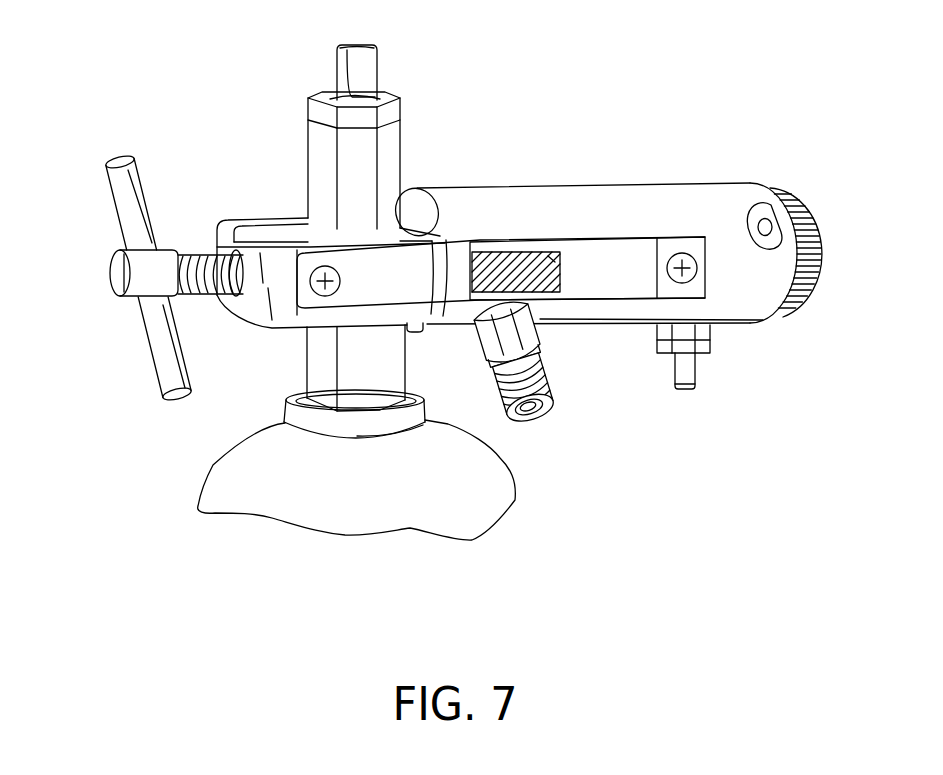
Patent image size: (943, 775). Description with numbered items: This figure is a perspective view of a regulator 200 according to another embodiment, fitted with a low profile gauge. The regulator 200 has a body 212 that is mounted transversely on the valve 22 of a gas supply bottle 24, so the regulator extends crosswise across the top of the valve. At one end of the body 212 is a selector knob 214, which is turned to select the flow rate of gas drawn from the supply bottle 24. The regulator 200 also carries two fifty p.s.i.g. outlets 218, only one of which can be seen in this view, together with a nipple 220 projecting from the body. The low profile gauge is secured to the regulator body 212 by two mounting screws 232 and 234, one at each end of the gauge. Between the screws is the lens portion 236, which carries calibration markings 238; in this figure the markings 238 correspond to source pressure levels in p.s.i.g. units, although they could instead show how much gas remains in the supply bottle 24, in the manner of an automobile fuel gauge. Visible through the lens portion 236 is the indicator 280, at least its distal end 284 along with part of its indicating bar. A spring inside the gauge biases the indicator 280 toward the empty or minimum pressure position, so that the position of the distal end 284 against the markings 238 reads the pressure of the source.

The valve 22 is at (308, 137).
The gas supply bottle 24 is at (241, 478).
The regulator 200 is at (612, 109).
The body 212 is at (693, 197).
The selector knob 214 is at (820, 258).
The outlet 218 is at (537, 421).
The nipple 220 is at (695, 368).
The mounting screw 232 is at (112, 277).
The mounting screw 234 is at (692, 270).
The lens portion 236 is at (652, 249).
The calibration markings 238 is at (577, 249).
The indicator 280 is at (480, 283).
The distal end 284 is at (555, 262).